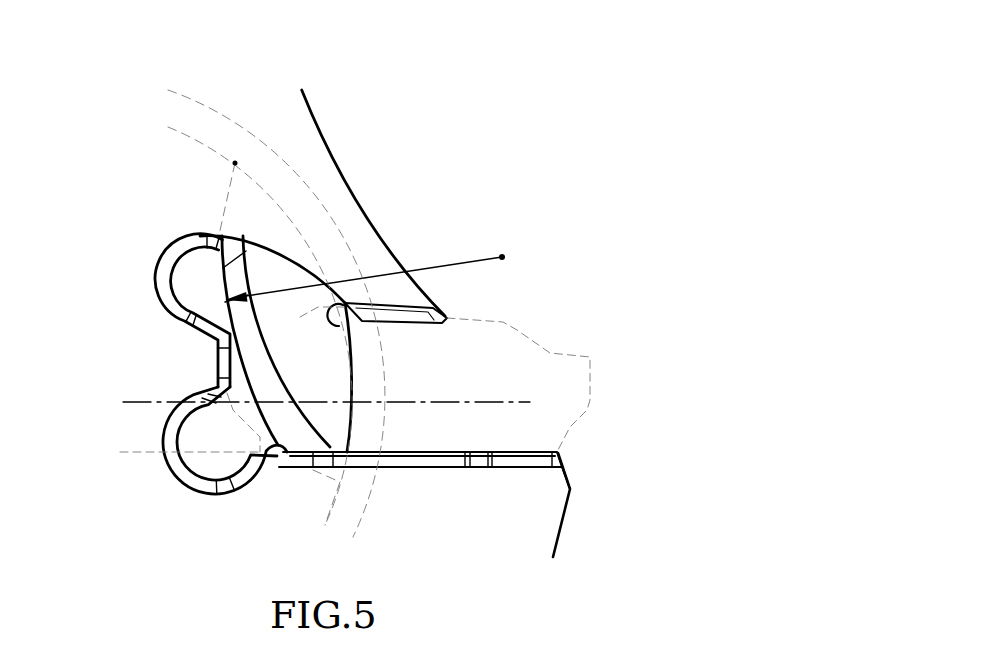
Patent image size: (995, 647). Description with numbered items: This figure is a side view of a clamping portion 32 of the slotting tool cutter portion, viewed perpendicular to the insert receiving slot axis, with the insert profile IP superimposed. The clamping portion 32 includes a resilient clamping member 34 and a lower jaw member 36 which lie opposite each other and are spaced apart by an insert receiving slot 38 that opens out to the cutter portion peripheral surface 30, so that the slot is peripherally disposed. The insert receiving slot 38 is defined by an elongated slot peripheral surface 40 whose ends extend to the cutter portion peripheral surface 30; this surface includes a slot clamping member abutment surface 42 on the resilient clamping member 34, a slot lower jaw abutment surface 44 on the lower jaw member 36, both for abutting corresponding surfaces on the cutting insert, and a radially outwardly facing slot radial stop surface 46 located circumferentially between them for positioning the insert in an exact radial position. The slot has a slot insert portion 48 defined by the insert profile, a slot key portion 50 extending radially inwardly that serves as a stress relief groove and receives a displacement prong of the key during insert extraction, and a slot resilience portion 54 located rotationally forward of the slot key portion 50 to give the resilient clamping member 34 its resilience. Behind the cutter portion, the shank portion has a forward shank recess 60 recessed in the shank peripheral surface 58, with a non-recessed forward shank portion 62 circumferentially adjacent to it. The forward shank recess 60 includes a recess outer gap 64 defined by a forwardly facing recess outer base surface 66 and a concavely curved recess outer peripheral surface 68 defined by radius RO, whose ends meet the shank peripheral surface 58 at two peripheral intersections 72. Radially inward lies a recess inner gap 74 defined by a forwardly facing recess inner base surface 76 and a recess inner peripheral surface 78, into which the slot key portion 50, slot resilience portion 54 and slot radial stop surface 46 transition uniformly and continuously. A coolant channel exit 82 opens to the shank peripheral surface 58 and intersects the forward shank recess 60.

The cutter portion peripheral surface 30 is at (390, 247).
The clamping portion 32 is at (549, 129).
The resilient clamping member 34 is at (385, 191).
The lower jaw member 36 is at (532, 508).
The insert receiving slot 38 is at (503, 364).
The slot peripheral surface 40 is at (445, 452).
The slot clamping member abutment surface 42 is at (415, 323).
The slot lower jaw abutment surface 44 is at (525, 452).
The slot radial stop surface 46 is at (208, 355).
The slot insert portion 48 is at (499, 402).
The slot key portion 50 is at (196, 445).
The slot resilience portion 54 is at (263, 318).
The shank peripheral surface 58 is at (180, 133).
The forward shank recess 60 is at (297, 232).
The non-recessed forward shank portion 62 is at (223, 66).
The recess outer gap 64 is at (352, 430).
The recess outer base surface 66 is at (352, 424).
The recess outer peripheral surface 68 is at (250, 252).
The peripheral intersections 72 is at (235, 163).
The recess inner gap 74 is at (178, 256).
The recess inner base surface 76 is at (214, 462).
The recess inner peripheral surface 78 is at (170, 422).
The coolant channel exit 82 is at (328, 309).